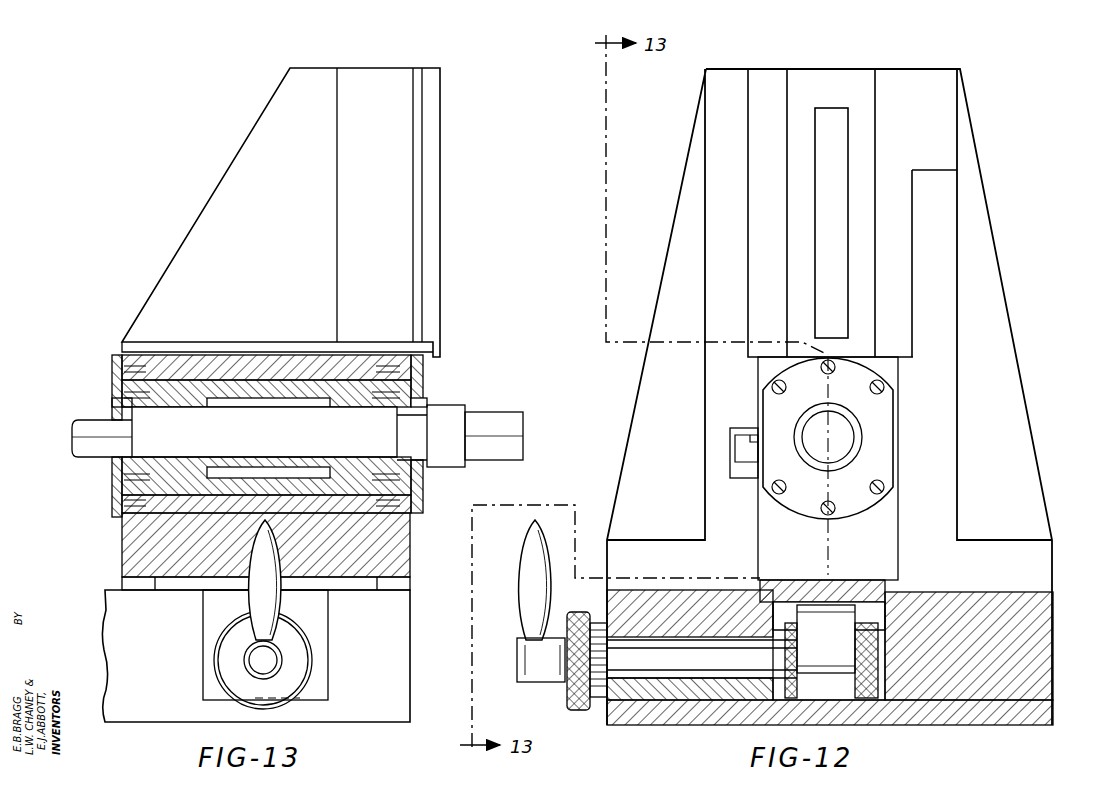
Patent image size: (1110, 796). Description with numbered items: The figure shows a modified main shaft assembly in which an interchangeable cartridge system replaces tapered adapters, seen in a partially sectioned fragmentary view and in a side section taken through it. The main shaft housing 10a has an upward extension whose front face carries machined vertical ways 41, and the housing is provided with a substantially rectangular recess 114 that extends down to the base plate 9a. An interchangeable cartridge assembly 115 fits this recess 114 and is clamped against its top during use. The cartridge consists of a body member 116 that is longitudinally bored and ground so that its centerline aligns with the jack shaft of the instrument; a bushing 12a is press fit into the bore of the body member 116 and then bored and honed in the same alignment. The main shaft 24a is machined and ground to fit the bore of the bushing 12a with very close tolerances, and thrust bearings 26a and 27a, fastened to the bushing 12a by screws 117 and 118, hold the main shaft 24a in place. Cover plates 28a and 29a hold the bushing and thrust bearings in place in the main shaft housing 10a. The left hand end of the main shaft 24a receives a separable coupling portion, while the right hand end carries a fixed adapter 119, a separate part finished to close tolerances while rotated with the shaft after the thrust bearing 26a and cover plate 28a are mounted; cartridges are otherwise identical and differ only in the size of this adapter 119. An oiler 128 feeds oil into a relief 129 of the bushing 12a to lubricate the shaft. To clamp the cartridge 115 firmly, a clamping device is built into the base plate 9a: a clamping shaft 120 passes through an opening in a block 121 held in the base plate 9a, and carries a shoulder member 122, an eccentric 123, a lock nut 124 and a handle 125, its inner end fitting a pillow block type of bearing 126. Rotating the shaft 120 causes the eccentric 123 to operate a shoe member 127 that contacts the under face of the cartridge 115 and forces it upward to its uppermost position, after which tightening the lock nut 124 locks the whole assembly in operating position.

In FIG. 12, the base plate 9a is at (1030, 614).
In FIG. 13, the main shaft housing 10a is at (243, 208).
In FIG. 12, the main shaft housing 10a is at (980, 280).
In FIG. 13, the bushing 12a is at (175, 395).
In FIG. 13, the main shaft 24a is at (72, 437).
In FIG. 13, the thrust bearing 26a is at (428, 404).
In FIG. 13, the thrust bearing 27a is at (112, 468).
In FIG. 13, the cover plate 28a is at (424, 480).
In FIG. 12, the cover plate 28a is at (880, 436).
In FIG. 13, the cover plate 29a is at (112, 400).
In FIG. 13, the vertical ways 41 is at (430, 196).
In FIG. 12, the vertical ways 41 is at (787, 98).
In FIG. 13, the rectangular recess 114 is at (398, 587).
In FIG. 12, the rectangular recess 114 is at (898, 381).
In FIG. 13, the interchangeable cartridge assembly 115 is at (122, 534).
In FIG. 12, the interchangeable cartridge assembly 115 is at (880, 524).
In FIG. 13, the body member 116 is at (140, 553).
In FIG. 13, the screws 117 is at (424, 381).
In FIG. 13, the screws 118 is at (112, 384).
In FIG. 13, the fixed adapter 119 is at (523, 437).
In FIG. 12, the clamping shaft 120 is at (540, 680).
In FIG. 13, the block 121 is at (215, 622).
In FIG. 12, the block 121 is at (650, 720).
In FIG. 12, the shoulder member 122 is at (797, 680).
In FIG. 12, the eccentric 123 is at (817, 615).
In FIG. 13, the lock nut 124 is at (233, 663).
In FIG. 12, the lock nut 124 is at (578, 710).
In FIG. 12, the handle 125 is at (532, 586).
In FIG. 12, the pillow block type of bearing 126 is at (896, 605).
In FIG. 13, the shoe member 127 is at (175, 585).
In FIG. 12, the shoe member 127 is at (853, 595).
In FIG. 12, the oiler 128 is at (740, 445).
In FIG. 13, the relief 129 is at (225, 378).